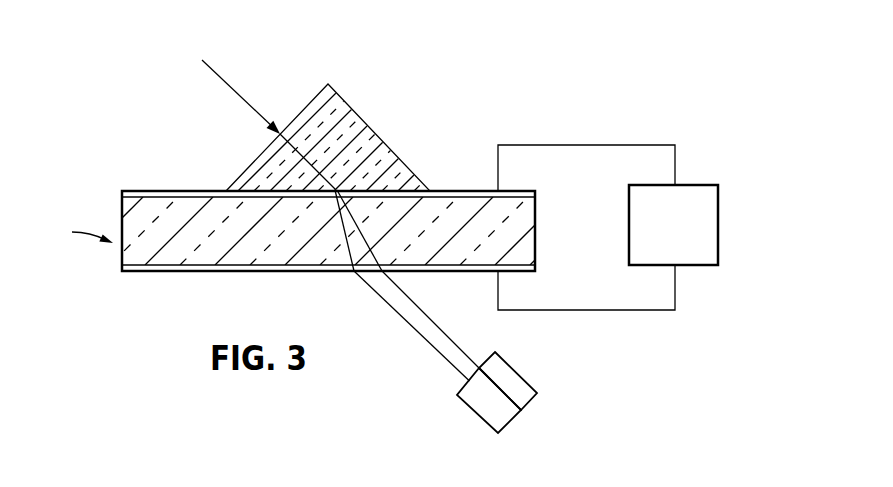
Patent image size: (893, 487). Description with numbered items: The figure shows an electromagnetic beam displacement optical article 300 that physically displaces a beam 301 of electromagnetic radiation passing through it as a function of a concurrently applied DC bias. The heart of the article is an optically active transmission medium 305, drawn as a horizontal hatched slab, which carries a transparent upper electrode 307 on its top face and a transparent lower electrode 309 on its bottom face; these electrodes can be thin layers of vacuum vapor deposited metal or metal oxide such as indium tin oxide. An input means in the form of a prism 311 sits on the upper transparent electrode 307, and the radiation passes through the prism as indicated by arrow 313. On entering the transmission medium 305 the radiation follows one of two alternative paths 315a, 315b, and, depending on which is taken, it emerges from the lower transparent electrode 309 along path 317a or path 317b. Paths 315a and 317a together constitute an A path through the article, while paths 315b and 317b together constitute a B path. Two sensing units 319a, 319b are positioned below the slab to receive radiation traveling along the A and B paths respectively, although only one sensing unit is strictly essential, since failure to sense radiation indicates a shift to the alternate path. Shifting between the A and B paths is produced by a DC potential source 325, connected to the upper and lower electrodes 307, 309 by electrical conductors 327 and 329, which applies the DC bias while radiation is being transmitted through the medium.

The optical article 300 is at (81, 227).
The beam 301 is at (233, 90).
The optically active transmission medium 305 is at (538, 227).
The upper transparent electrode 307 is at (159, 191).
The lower transparent electrode 309 is at (181, 272).
The prism 311 is at (367, 124).
The arrow 313 is at (288, 154).
The path 315a is at (348, 256).
The path 315b is at (362, 239).
The path 317a is at (411, 323).
The path 317b is at (424, 311).
The A path A is at (412, 329).
The B path B is at (434, 320).
The sensing unit 319a is at (510, 424).
The sensing unit 319b is at (538, 394).
The DC potential source 325 is at (630, 254).
The electrical conductor 327 is at (598, 144).
The electrical conductor 329 is at (625, 310).